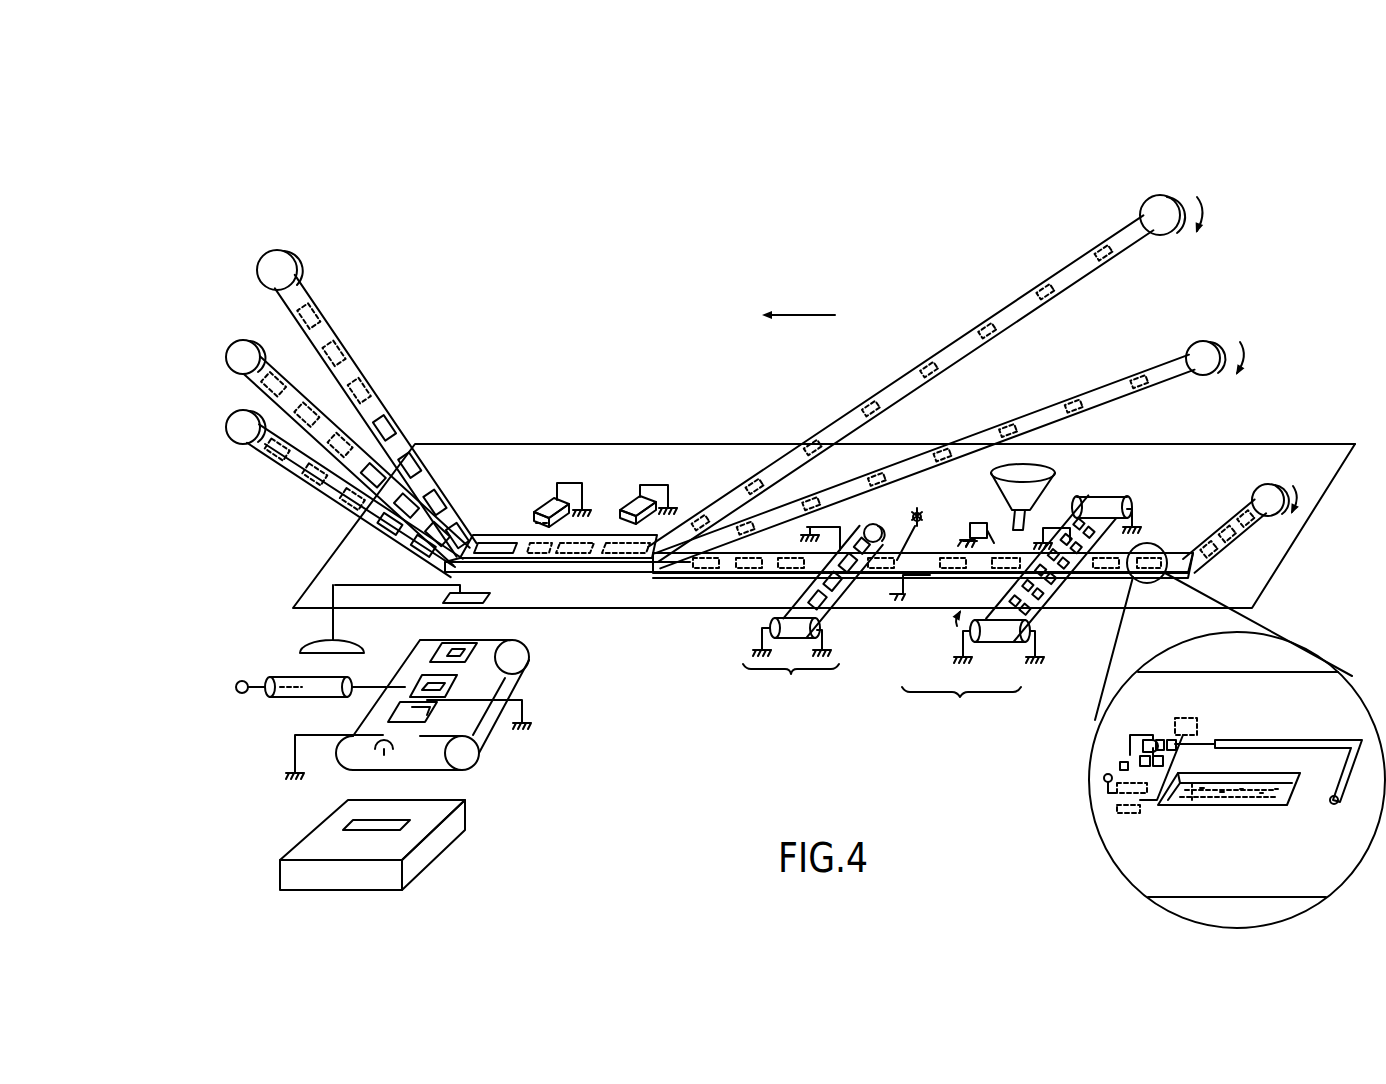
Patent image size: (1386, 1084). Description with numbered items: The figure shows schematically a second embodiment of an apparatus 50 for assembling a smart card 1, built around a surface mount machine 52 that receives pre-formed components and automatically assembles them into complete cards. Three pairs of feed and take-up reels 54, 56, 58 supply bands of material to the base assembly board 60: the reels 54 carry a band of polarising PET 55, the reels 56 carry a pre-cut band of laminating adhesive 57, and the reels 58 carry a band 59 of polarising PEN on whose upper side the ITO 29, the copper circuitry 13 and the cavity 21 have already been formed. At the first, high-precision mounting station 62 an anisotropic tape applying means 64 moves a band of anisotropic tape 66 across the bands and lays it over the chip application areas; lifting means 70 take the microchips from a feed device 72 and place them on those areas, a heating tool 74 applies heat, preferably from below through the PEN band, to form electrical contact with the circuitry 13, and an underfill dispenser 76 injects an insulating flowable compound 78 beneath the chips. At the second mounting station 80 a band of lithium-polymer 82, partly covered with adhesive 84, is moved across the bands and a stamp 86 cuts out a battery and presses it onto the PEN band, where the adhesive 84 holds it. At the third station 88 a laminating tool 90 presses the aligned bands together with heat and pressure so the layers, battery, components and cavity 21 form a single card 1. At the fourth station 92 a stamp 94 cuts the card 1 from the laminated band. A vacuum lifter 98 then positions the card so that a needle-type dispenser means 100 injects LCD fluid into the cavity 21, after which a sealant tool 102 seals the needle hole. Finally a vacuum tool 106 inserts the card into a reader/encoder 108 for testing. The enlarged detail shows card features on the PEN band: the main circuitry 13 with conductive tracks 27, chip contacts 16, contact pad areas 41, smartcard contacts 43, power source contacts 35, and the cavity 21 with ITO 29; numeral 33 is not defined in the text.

The card 1 is at (500, 596).
The main circuitry 13 is at (1153, 734).
The contacts 16 is at (1196, 712).
The cavity 21 is at (1203, 795).
The conductive tracks 27 is at (1335, 804).
The ITO 29 is at (1241, 793).
The motor 33 is at (309, 678).
The contacts for the power source 35 is at (1345, 800).
The contact pad areas 41 is at (1101, 778).
The smartcard contacts 43 is at (1130, 755).
The apparatus 50 is at (513, 244).
The surface mount machine 52 is at (752, 438).
The pair of feed and take-up reels 54 is at (288, 255).
The band of polarising PET 55 is at (1088, 264).
The pair of feed and take-up reels 56 is at (240, 338).
The band of laminating adhesive 57 is at (1168, 377).
The pair of feed and take-up reels 58 is at (233, 417).
The band of polarising PEN 59 is at (270, 472).
The base assembly board 60 is at (1250, 444).
The first mounting station 62 is at (1038, 593).
The anisotropic tape applying means 64 is at (1121, 486).
The anisotropic tape 66 is at (1134, 542).
The lifting means 70 is at (979, 523).
The feed device 72 is at (1042, 473).
The heating tool 74 is at (888, 580).
The underfill dispenser 76 is at (912, 518).
The flowable compound 78 is at (930, 528).
The second mounting station 80 is at (814, 616).
The band of lithium-polymer 82 is at (792, 599).
The adhesive 84 is at (884, 589).
The stamp 86 is at (802, 527).
The third station 88 is at (666, 482).
The laminating tool 90 is at (628, 521).
The fourth station 92 is at (582, 483).
The stamp 94 is at (529, 507).
The vacuum lifter 98 is at (333, 626).
The dispenser means 100 is at (356, 695).
The sealant tool 102 is at (526, 713).
The vacuum tool 106 is at (295, 750).
The reader/encoder 108 is at (470, 810).